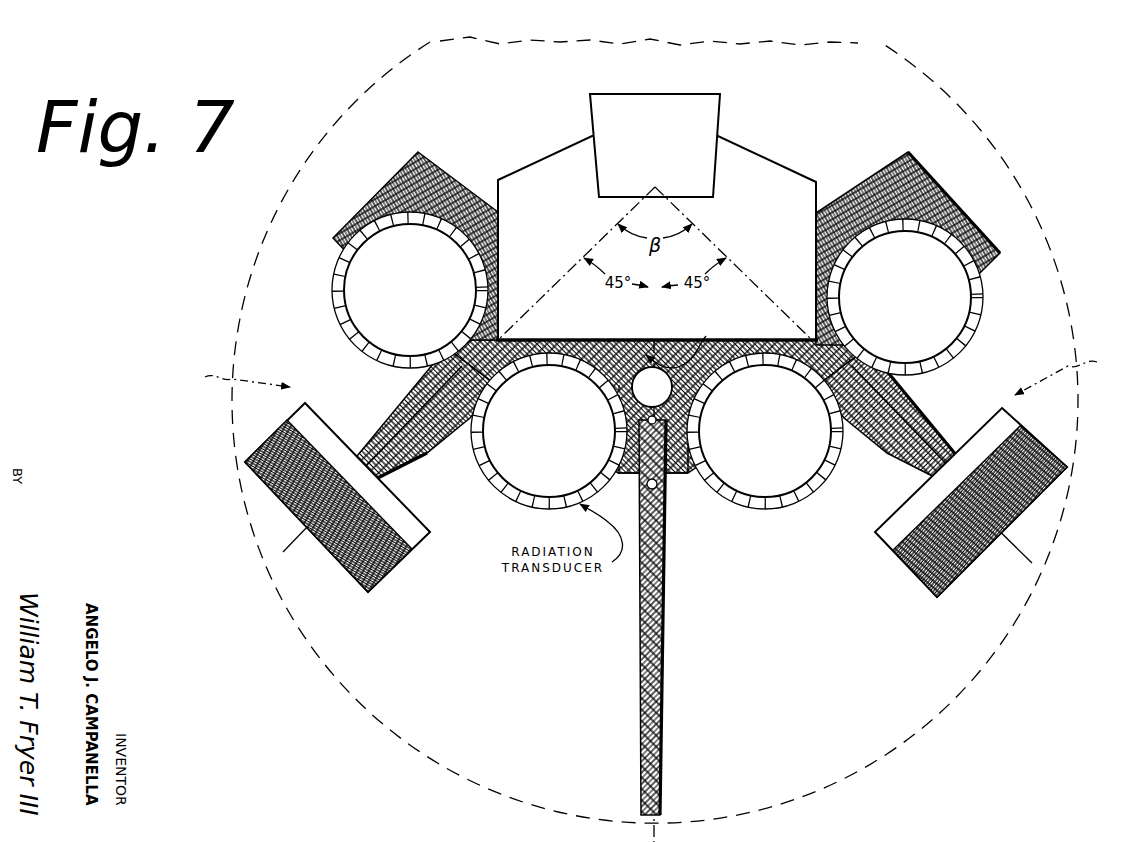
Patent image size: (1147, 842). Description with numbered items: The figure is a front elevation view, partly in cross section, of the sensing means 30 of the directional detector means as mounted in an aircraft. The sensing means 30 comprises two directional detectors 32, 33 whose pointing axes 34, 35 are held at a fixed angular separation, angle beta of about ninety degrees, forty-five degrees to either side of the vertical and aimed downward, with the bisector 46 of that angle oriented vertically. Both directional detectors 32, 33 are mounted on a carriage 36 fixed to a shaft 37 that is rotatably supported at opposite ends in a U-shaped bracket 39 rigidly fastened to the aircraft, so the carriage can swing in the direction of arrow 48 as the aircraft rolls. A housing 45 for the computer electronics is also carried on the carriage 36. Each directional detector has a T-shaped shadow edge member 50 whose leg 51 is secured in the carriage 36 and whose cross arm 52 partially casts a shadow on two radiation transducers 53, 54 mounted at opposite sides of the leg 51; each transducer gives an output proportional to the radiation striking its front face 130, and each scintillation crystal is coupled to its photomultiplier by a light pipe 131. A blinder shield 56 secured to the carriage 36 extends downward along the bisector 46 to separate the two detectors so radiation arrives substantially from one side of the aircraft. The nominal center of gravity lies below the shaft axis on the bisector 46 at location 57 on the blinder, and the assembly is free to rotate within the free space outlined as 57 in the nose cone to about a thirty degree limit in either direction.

The sensing means 30 is at (788, 624).
The directional detector 32 is at (1070, 372).
The directional detector 33 is at (233, 378).
The pointing axis 34 is at (754, 284).
The pointing axis 35 is at (560, 283).
The carriage 36 is at (450, 190).
The shaft 37 is at (625, 342).
The U-shaped bracket 39 is at (716, 106).
The housing 45 is at (803, 180).
The bisector 46 is at (657, 323).
The arrow 48 is at (687, 344).
The shadow edge member 50 is at (266, 482).
The leg 51 is at (406, 405).
The cross arm 52 is at (300, 516).
The radiation transducer 53 is at (338, 278).
The radiation transducer 54 is at (975, 301).
The blinder shield 56 is at (641, 703).
The center of gravity location / free space 57 is at (963, 125).
The front face 130 is at (346, 322).
The light pipe 131 is at (470, 336).